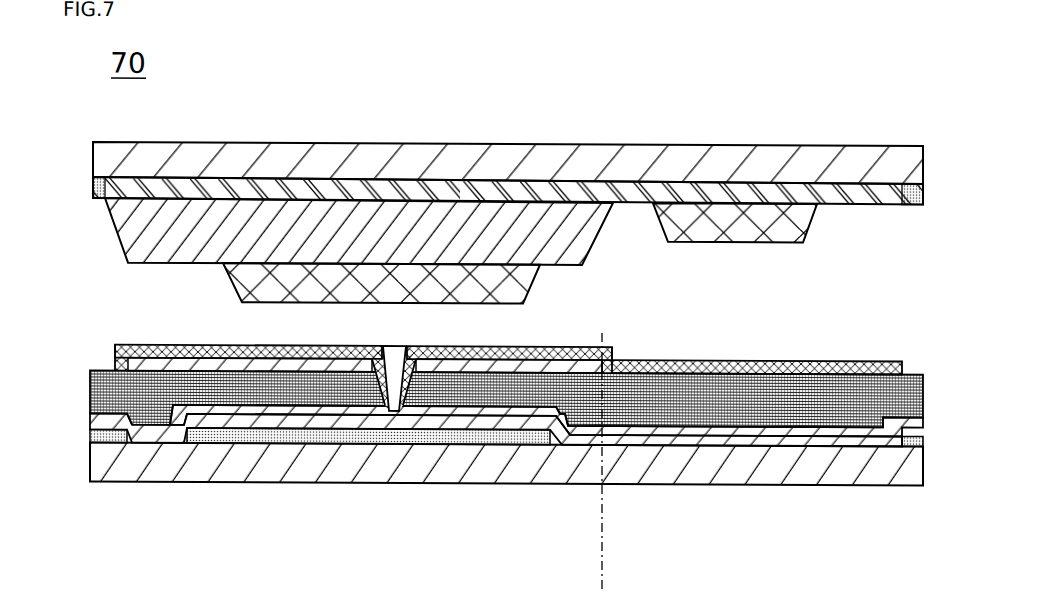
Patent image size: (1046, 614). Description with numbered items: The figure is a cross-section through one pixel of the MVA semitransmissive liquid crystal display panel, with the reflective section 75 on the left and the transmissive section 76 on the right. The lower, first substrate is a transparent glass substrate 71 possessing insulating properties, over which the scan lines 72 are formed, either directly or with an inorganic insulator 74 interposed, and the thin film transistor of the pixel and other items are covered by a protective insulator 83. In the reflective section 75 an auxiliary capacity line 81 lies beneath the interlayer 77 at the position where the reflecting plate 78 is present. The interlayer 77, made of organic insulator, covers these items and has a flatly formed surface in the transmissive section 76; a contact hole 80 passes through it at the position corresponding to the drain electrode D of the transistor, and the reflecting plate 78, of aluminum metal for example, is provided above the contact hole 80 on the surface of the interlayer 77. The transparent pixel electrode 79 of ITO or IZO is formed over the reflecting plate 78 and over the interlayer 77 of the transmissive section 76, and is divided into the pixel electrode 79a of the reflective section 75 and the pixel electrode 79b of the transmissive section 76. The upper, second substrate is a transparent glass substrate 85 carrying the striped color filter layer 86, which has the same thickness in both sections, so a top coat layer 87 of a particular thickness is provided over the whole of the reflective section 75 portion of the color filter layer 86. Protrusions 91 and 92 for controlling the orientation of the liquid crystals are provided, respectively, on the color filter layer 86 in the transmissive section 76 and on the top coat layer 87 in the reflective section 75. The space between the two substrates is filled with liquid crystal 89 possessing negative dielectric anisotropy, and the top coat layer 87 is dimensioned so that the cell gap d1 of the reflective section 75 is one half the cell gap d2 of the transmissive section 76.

The transparent glass substrate 71 is at (273, 462).
The scan lines 72 is at (97, 444).
The inorganic insulator 74 is at (767, 437).
The reflective section 75 is at (647, 581).
The transmissive section 76 is at (793, 576).
The interlayer 77 is at (352, 398).
The reflecting plate 78 is at (467, 363).
The pixel electrode 79 is at (508, 327).
The pixel electrode of the reflective section 79a is at (567, 346).
The pixel electrode of the transmissive section 79b is at (757, 345).
The contact hole 80 is at (384, 409).
The auxiliary capacity line 81 is at (495, 429).
The protective insulator 83 is at (710, 429).
The drain electrode D is at (322, 414).
The transparent glass substrate 85 is at (322, 141).
The color filter layer 86 is at (815, 182).
The top coat layer 87 is at (500, 247).
The liquid crystal 89 is at (840, 305).
The protrusion 91 is at (690, 225).
The protrusion 92 is at (273, 290).
The cell gap d1 is at (135, 263).
The cell gap d2 is at (883, 201).